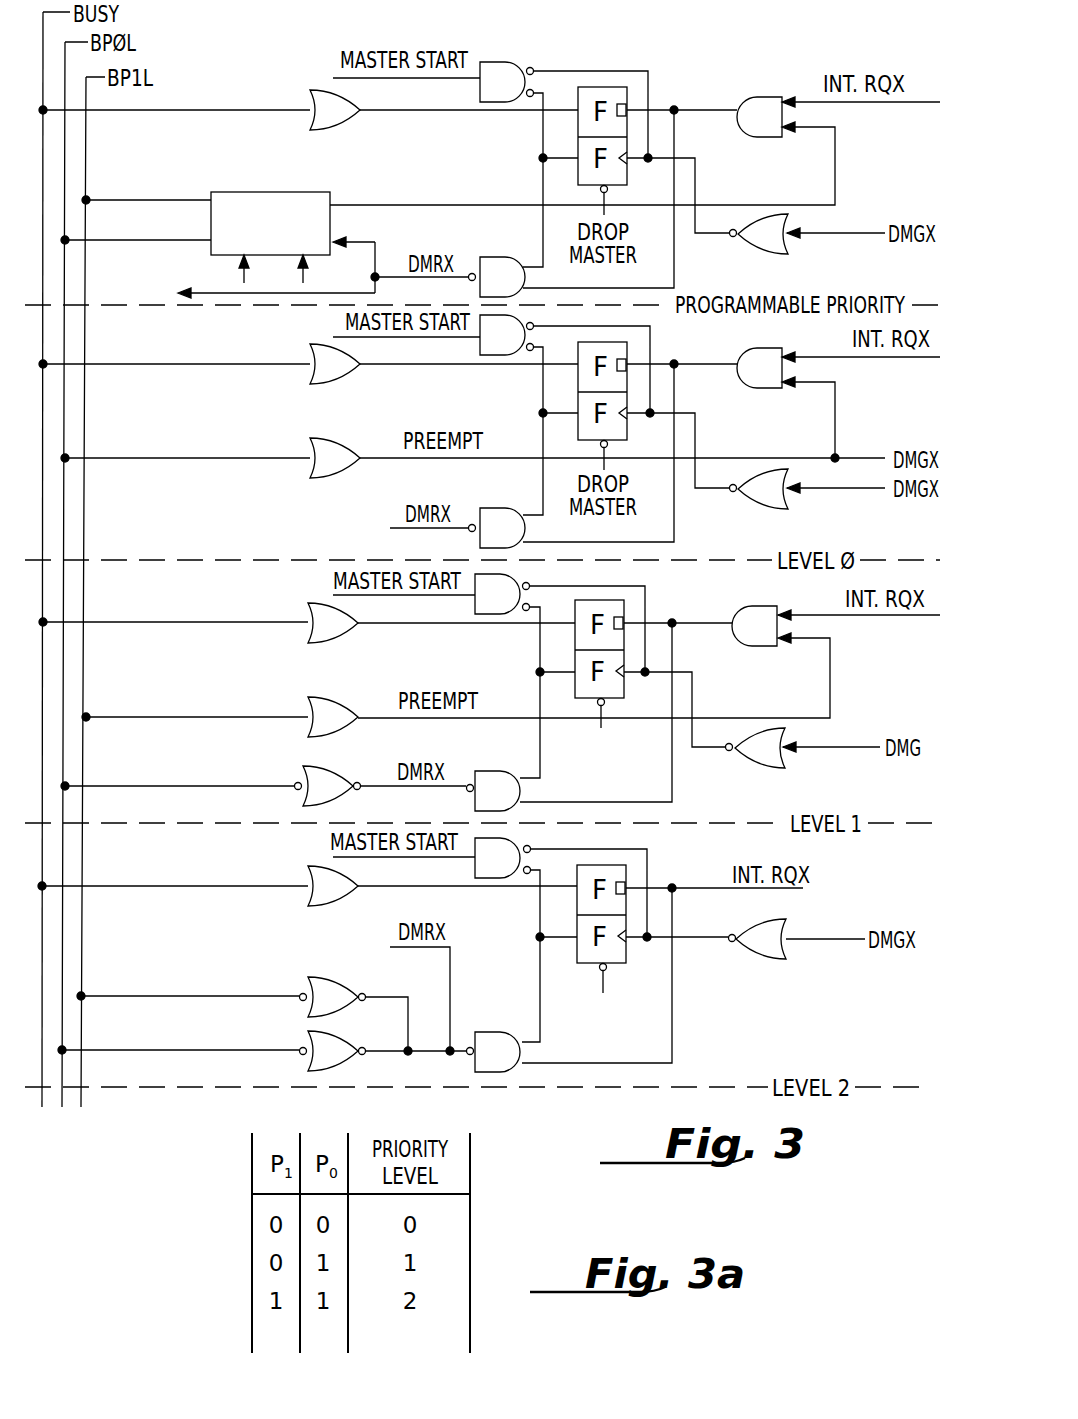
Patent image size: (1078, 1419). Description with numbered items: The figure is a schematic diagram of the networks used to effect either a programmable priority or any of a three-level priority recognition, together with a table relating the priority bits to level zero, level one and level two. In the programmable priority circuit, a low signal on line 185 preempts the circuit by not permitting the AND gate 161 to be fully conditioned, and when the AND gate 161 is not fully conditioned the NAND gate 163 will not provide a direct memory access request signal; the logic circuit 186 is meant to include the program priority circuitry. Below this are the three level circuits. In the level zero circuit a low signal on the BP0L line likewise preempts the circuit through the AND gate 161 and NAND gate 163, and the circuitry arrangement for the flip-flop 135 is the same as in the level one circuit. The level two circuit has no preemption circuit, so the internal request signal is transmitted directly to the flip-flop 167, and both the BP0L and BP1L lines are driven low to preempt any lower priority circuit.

The flip-flop 135 is at (622, 88).
The AND gate 161 is at (760, 97).
The NAND gate 163 is at (505, 268).
The flip-flop 167 is at (626, 875).
The line 185 is at (428, 205).
The logic circuit 186 is at (318, 193).